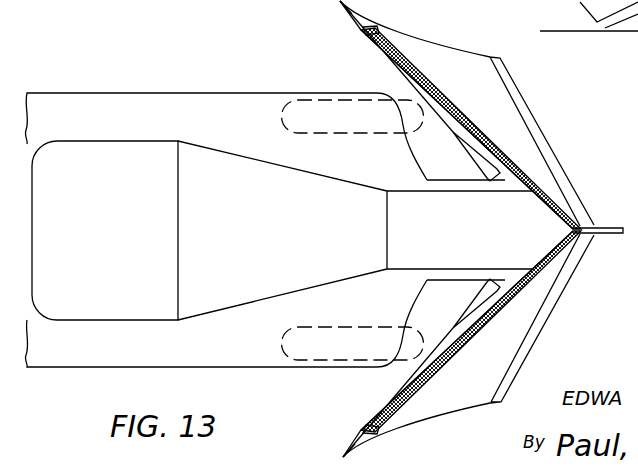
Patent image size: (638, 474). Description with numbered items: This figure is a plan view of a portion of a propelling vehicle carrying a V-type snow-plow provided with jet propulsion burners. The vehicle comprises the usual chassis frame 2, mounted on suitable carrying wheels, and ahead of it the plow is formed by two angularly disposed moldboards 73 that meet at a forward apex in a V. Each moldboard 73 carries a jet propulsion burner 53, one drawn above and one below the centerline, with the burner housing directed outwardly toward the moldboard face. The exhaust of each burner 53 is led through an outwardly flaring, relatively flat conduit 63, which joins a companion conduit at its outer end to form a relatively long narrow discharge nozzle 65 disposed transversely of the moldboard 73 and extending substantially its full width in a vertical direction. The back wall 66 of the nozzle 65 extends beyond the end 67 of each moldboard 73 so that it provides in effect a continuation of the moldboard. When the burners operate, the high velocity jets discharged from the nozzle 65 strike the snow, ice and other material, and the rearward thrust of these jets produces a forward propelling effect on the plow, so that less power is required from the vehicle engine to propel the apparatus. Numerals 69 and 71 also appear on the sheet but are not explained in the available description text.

The chassis frame 2 is at (449, 193).
The jet propulsion burner 53 is at (462, 154).
The outwardly flaring relatively flat conduit 63 is at (400, 73).
The discharge nozzle 65 is at (366, 33).
The back wall of the nozzle 66 is at (343, 9).
The end of the moldboard 67 is at (433, 47).
The moldboard 73 is at (540, 183).
The adjacent figure member 69 is at (590, 24).
The adjacent figure member 71 is at (621, 2).